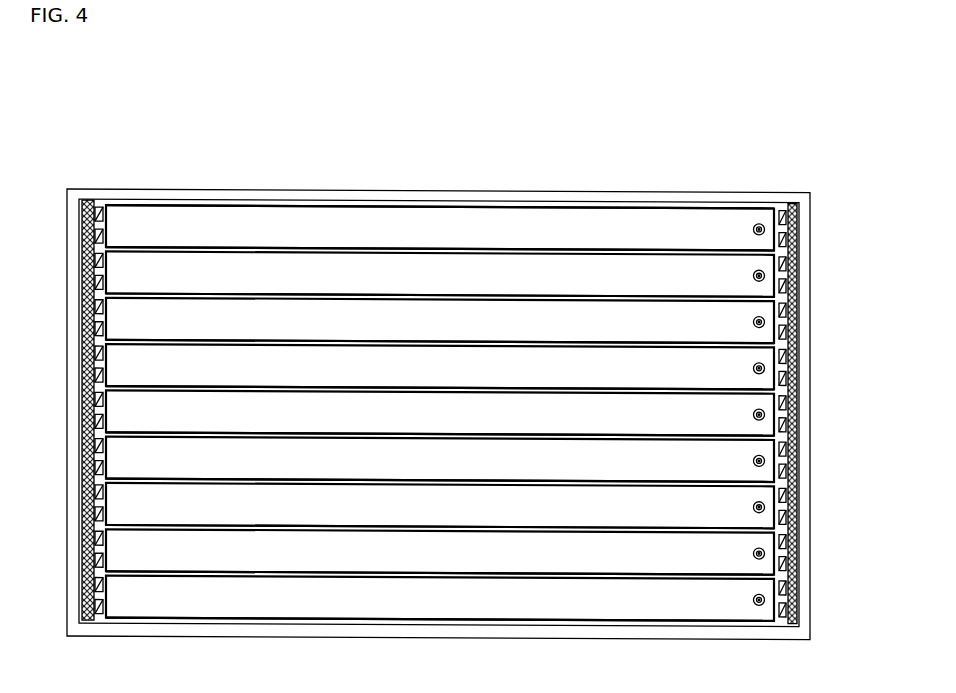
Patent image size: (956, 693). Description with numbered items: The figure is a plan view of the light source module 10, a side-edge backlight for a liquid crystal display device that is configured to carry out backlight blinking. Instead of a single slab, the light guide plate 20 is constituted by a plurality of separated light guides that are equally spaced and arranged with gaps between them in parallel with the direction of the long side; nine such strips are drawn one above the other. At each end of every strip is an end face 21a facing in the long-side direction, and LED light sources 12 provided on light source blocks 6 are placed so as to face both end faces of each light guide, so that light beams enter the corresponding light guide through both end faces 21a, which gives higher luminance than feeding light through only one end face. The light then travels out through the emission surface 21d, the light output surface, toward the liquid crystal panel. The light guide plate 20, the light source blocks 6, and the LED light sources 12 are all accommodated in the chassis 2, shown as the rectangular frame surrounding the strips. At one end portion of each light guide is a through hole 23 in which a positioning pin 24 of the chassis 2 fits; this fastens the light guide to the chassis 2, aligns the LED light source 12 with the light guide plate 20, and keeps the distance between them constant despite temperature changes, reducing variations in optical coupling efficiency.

The chassis 2 is at (92, 627).
The light source block 6 is at (89, 202).
The light source module 10 is at (792, 146).
The LED light source 12 is at (99, 203).
The light guide plate 20 is at (300, 141).
The end face 21a is at (778, 226).
The emission surface 21d is at (673, 222).
The through hole 23 is at (752, 597).
The positioning pin 24 is at (761, 600).